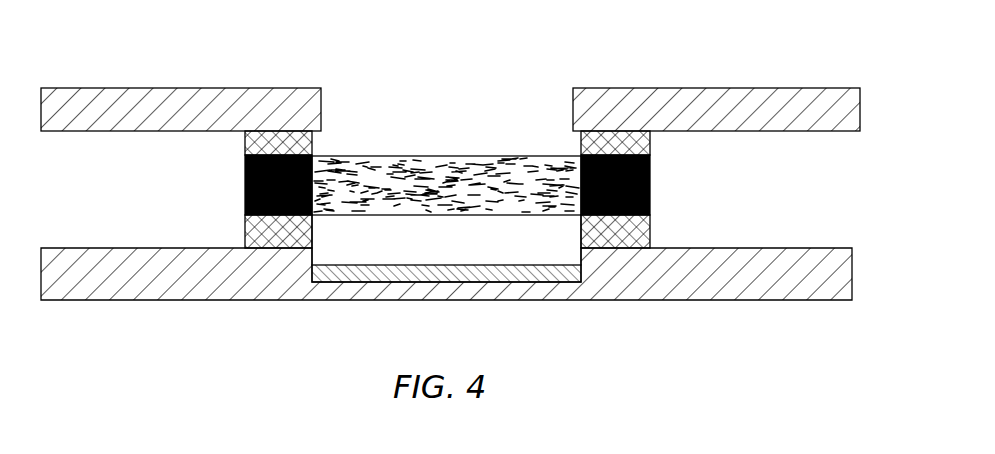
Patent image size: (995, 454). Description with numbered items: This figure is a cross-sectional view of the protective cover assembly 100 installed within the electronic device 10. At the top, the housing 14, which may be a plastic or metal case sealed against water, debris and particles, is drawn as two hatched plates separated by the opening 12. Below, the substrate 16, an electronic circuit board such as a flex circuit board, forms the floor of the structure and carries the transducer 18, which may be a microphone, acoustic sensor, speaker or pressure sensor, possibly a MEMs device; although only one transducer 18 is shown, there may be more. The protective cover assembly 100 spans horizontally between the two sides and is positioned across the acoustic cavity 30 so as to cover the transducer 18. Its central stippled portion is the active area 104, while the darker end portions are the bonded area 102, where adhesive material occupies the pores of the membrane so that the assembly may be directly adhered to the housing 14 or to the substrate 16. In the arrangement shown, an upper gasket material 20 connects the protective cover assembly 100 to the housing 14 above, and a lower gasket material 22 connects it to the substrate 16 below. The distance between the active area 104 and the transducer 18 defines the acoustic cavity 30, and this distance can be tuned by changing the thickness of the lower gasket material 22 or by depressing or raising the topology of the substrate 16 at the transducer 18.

The electronic device 10 is at (616, 62).
The opening 12 is at (331, 86).
The housing 14 is at (210, 88).
The substrate 16 is at (687, 300).
The transducer 18 is at (513, 282).
The upper gasket material 20 is at (245, 141).
The lower gasket material 22 is at (245, 230).
The acoustic cavity 30 is at (343, 240).
The protective cover assembly 100 is at (664, 200).
The bonded area 102 is at (244, 187).
The active area 104 is at (497, 156).